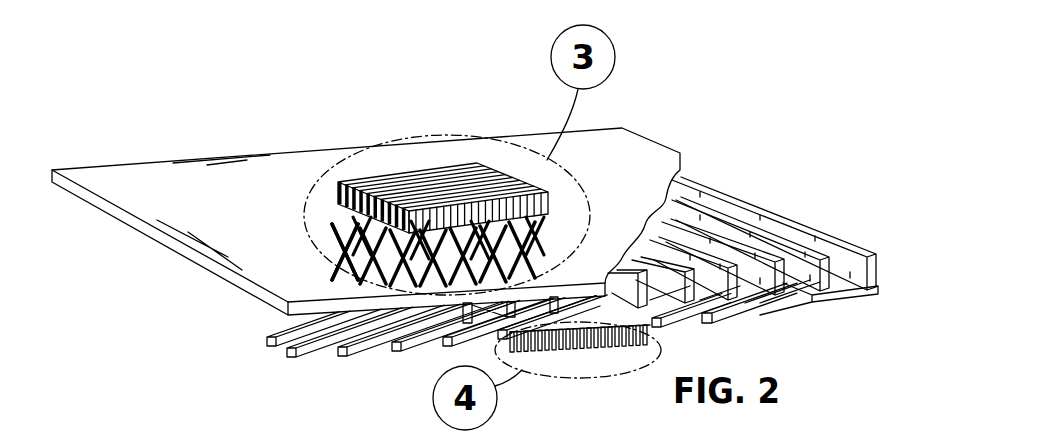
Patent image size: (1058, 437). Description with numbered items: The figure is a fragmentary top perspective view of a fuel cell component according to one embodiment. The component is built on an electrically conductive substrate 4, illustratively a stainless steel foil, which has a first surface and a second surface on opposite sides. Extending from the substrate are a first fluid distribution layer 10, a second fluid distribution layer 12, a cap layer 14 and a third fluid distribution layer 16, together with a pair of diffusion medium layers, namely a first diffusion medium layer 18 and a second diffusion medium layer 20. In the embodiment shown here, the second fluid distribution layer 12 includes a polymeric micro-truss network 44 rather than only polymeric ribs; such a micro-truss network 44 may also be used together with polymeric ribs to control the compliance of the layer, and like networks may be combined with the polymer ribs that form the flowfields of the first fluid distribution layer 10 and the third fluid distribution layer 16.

The electrically conductive substrate 4 is at (652, 138).
The second diffusion medium layer 20 is at (505, 150).
The second fluid distribution layer 12 is at (556, 216).
The polymeric micro-truss network 44 is at (331, 218).
The first fluid distribution layer 10 is at (880, 240).
The cap layer 14 is at (768, 318).
The third fluid distribution layer 16 is at (806, 318).
The first diffusion medium layer 18 is at (588, 366).